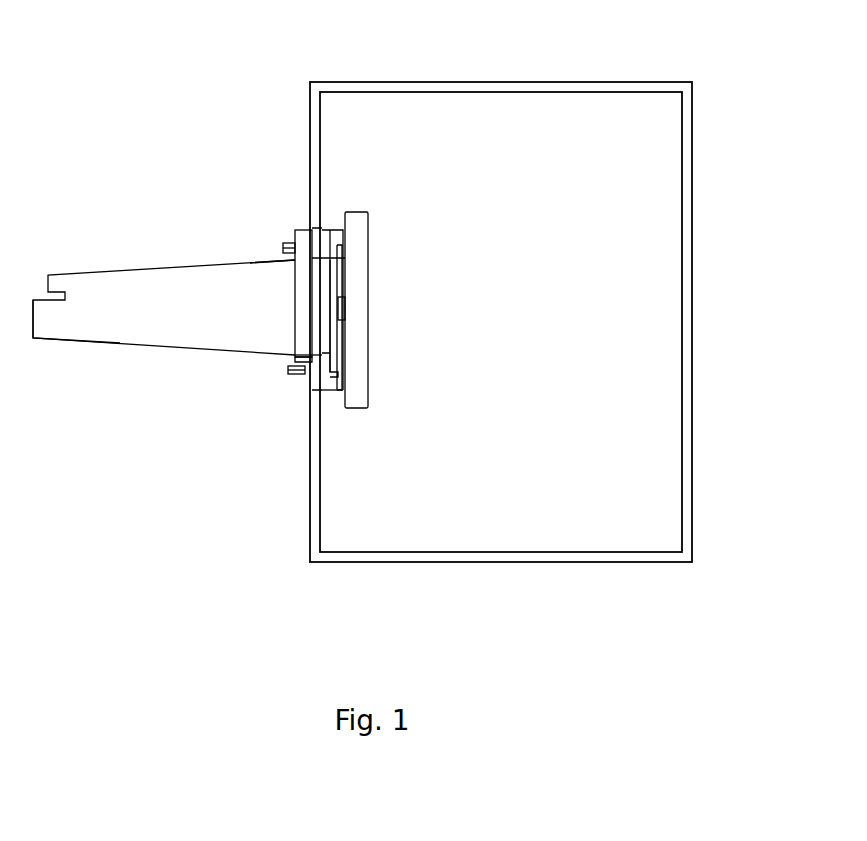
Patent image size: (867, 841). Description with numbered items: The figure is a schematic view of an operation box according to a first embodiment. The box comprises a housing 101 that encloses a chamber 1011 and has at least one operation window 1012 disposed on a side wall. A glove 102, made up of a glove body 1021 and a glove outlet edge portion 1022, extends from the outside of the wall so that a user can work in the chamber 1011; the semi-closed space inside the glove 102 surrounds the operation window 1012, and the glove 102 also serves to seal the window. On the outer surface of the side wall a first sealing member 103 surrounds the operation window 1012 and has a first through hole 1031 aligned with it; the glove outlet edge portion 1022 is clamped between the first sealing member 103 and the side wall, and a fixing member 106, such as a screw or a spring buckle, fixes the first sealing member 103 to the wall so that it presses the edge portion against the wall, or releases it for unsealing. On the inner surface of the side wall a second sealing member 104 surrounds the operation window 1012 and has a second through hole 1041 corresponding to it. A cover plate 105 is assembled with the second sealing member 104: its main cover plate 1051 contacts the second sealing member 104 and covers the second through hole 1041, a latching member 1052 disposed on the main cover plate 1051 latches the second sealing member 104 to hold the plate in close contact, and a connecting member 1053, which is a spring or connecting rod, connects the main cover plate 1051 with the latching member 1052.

The housing 101 is at (360, 82).
The chamber 1011 is at (490, 112).
The operation window 1012 is at (311, 228).
The glove 102 is at (149, 260).
The glove body 1021 is at (85, 340).
The glove outlet edge portion 1022 is at (286, 260).
The first sealing member 103 is at (285, 232).
The first through hole 1031 is at (300, 358).
The second sealing member 104 is at (328, 230).
The second through hole 1041 is at (318, 400).
The cover plate 105 is at (355, 203).
The main cover plate 1051 is at (357, 410).
The latching member 1052 is at (330, 400).
The connecting member 1053 is at (336, 400).
The fixing member 106 is at (290, 247).